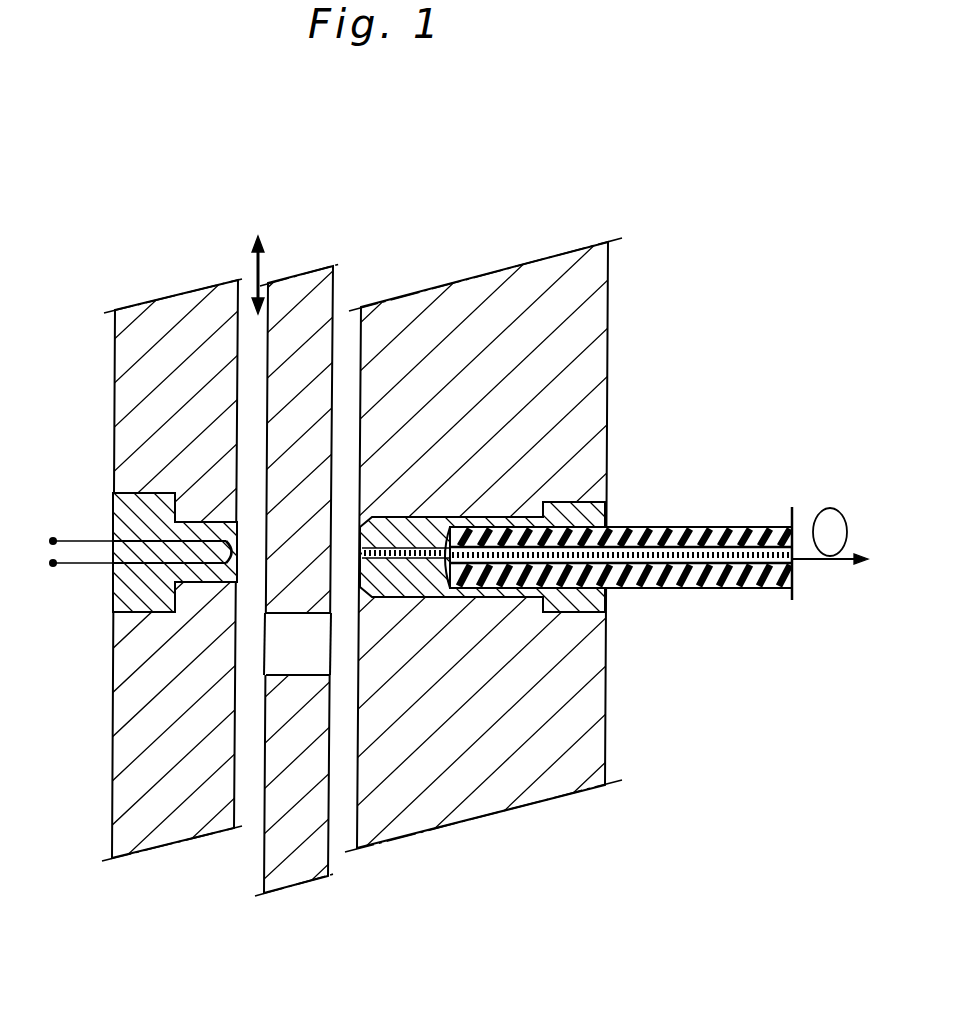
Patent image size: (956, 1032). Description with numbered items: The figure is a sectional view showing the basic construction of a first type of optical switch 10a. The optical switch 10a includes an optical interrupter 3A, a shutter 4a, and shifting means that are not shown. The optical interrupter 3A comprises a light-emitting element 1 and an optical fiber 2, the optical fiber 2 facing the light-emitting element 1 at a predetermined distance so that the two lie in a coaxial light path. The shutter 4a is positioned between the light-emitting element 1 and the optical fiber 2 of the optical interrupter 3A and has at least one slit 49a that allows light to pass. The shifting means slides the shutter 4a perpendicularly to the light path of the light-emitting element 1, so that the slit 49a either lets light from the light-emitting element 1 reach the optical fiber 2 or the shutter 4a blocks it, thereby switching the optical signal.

The optical switch 10a is at (429, 188).
The shutter 4a is at (318, 273).
The slit 49a is at (313, 658).
The optical interrupter 3A is at (72, 640).
The light-emitting element 1 is at (198, 568).
The optical fiber 2 is at (410, 589).